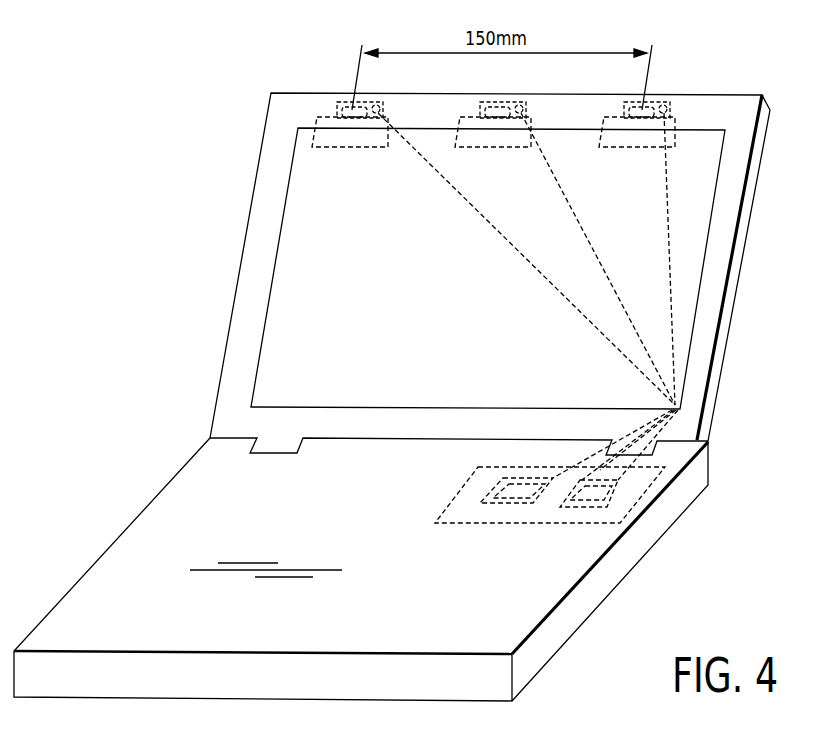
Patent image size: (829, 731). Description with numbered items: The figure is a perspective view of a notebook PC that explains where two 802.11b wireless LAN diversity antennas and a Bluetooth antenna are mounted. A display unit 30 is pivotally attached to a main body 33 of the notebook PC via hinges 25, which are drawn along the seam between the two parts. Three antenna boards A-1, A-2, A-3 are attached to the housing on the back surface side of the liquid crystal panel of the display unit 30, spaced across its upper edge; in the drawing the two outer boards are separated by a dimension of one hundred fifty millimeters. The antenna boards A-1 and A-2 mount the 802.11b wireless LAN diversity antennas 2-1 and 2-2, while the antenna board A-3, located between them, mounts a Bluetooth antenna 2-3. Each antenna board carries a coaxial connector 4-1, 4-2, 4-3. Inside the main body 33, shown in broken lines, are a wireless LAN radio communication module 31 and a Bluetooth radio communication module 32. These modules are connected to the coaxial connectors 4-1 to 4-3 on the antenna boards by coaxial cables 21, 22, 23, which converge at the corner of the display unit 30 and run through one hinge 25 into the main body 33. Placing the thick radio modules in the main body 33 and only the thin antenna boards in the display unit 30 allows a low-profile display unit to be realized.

The 802.11b wireless LAN diversity antenna 2-1 is at (353, 120).
The 802.11b wireless LAN diversity antenna 2-2 is at (640, 120).
The Bluetooth antenna 2-3 is at (496, 120).
The coaxial connector 4-1 is at (375, 103).
The coaxial connector 4-2 is at (662, 103).
The coaxial connector 4-3 is at (518, 103).
The antenna board A-1 is at (385, 107).
The antenna board A-2 is at (672, 107).
The antenna board A-3 is at (528, 107).
The coaxial cable 21 is at (470, 213).
The coaxial cable 22 is at (668, 213).
The coaxial cable 23 is at (568, 213).
The hinge 25 is at (268, 446).
The display unit 30 is at (244, 272).
The wireless LAN radio communication module 31 is at (487, 510).
The Bluetooth radio communication module 32 is at (567, 512).
The main body 33 is at (548, 645).